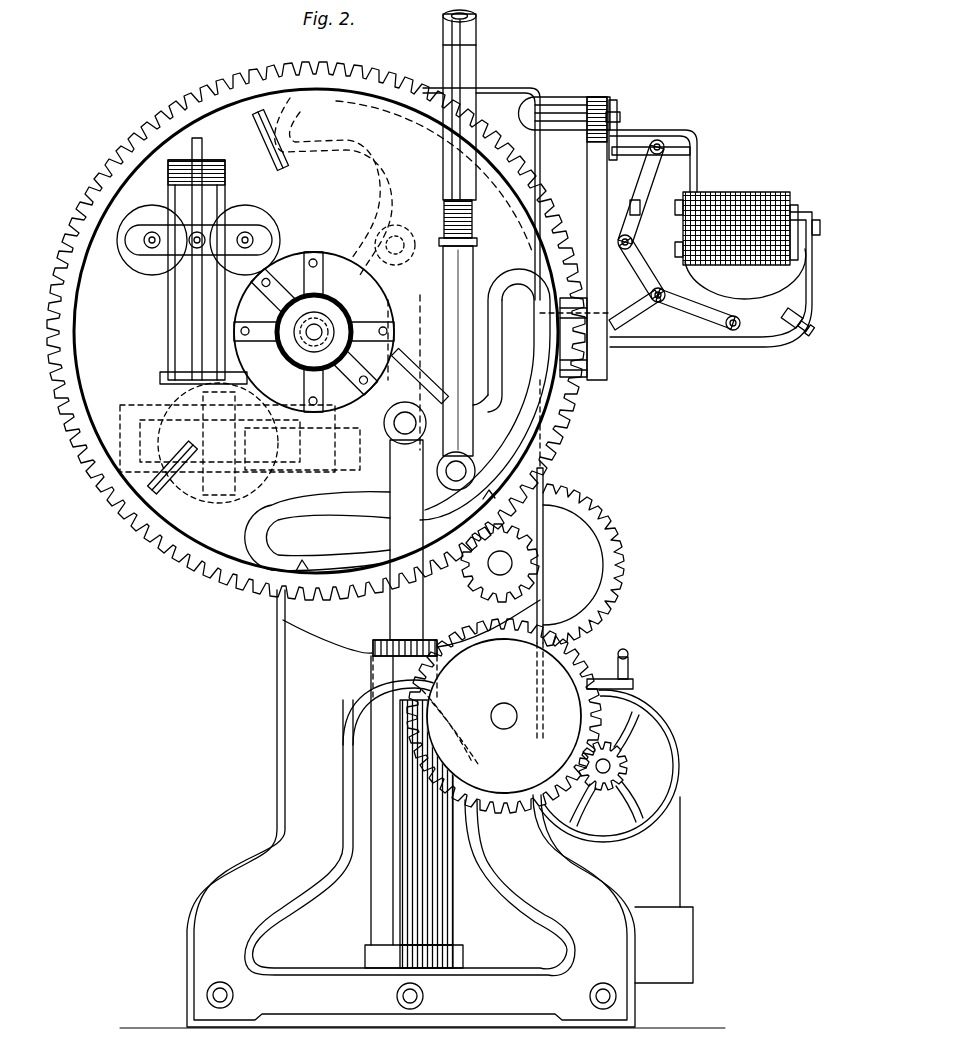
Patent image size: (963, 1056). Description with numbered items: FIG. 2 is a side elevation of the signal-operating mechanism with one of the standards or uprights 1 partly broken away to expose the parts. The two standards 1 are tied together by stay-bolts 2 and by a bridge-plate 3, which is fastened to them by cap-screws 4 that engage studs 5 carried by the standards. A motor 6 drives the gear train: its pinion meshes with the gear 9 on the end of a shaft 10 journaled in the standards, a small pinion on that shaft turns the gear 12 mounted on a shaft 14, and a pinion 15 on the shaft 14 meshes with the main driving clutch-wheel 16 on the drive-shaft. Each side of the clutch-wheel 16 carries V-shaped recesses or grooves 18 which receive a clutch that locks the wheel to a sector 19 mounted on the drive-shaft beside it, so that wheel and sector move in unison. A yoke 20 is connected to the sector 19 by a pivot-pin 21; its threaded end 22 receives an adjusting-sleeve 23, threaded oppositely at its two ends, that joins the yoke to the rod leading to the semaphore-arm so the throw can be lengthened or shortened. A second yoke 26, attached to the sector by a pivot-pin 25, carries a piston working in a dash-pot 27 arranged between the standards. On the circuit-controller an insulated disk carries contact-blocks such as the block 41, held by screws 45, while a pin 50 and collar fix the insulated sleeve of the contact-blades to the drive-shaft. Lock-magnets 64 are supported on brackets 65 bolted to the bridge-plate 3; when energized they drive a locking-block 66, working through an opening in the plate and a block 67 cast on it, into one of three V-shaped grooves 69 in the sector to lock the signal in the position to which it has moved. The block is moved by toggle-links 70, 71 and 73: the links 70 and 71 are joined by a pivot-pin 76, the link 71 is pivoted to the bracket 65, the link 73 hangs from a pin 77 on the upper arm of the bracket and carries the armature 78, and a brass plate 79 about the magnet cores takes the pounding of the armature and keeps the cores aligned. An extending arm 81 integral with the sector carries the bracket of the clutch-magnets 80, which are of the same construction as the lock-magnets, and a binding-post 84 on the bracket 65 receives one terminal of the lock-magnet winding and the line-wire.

The standards or uprights 1 is at (422, 809).
The stay-bolts 2 is at (234, 995).
The bridge-plate 3 is at (590, 183).
The cap-screws 4 is at (619, 111).
The studs 5 is at (555, 100).
The motor 6 is at (676, 768).
The gear 9 is at (504, 716).
The shaft 10 is at (504, 730).
The gear 12 is at (580, 604).
The shaft 14 is at (466, 578).
The pinion 15 is at (500, 566).
The main driving clutch-wheel 16 is at (300, 234).
The recesses or grooves 18 is at (283, 170).
The sector 19 is at (357, 170).
The yoke 20 is at (443, 305).
The pivot-pin 21 is at (463, 460).
The threaded end 22 is at (443, 206).
The adjusting-sleeve 23 is at (476, 42).
The pivot-pin 25 is at (402, 420).
The yoke 26 is at (346, 262).
The dash-pot 27 is at (380, 918).
The contact-block 41 is at (312, 258).
The screws 45 is at (328, 288).
The pin 50 is at (324, 322).
The lock-magnets 64 is at (738, 192).
The brackets 65 is at (738, 347).
The locking-block 66 is at (552, 330).
The block 67 is at (575, 342).
The V-shaped grooves or recesses 69 is at (300, 569).
The toggle-link 70 is at (628, 312).
The toggle-link 71 is at (698, 324).
The toggle-link 73 is at (645, 162).
The pivot-pin 76 is at (658, 303).
The pin 77 is at (668, 150).
The armature 78 is at (633, 242).
The brass plate 79 is at (700, 264).
The rollers 80 is at (272, 490).
The extending arm 81 is at (170, 318).
The binding-post 84 is at (803, 336).